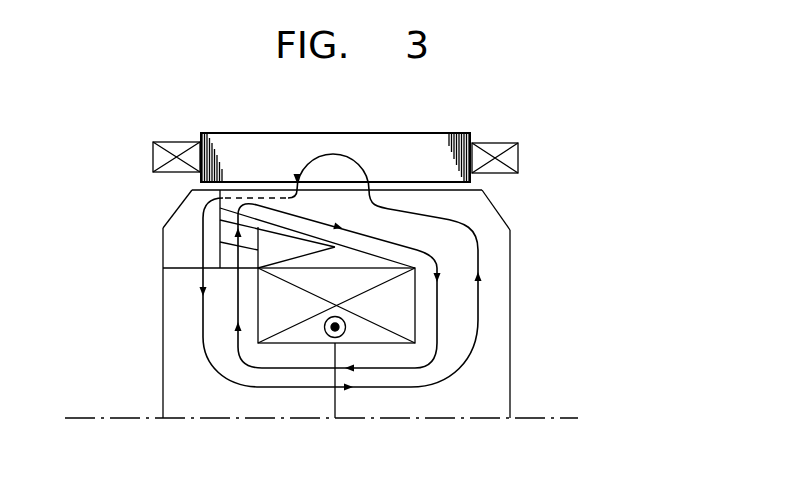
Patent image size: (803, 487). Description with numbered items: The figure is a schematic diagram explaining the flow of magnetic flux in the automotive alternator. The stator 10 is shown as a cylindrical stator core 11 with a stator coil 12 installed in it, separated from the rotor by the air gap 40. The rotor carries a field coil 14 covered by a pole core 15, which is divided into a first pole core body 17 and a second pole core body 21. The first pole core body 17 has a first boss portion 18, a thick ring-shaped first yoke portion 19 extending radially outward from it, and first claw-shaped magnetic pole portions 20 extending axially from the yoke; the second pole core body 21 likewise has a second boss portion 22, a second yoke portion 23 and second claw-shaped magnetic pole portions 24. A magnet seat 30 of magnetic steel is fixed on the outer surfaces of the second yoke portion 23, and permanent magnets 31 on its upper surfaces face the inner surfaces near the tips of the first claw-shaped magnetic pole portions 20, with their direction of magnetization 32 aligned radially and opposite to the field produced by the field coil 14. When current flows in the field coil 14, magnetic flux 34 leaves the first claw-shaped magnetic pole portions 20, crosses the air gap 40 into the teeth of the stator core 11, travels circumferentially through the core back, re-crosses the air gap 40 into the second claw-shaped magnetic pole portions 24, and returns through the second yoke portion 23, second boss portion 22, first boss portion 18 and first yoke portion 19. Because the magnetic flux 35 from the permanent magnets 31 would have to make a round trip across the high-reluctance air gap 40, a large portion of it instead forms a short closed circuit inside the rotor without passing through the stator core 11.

The stator 10 is at (477, 118).
The stator core 11 is at (433, 146).
The stator coil 12 is at (505, 148).
The field coil 14 is at (403, 298).
The pole core 15 is at (498, 202).
The first pole core body 17 is at (519, 402).
The first boss portion 18 is at (470, 392).
The first yoke portion 19 is at (492, 330).
The first claw-shaped magnetic pole portions 20 is at (477, 214).
The second pole core body 21 is at (156, 337).
The second boss portion 22 is at (203, 380).
The second yoke portion 23 is at (183, 305).
The second claw-shaped magnetic pole portions 24 is at (193, 205).
The magnet seat 30 is at (218, 255).
The permanent magnets 31 is at (225, 223).
The direction of magnetization 32 is at (235, 236).
The magnetic flux 34 is at (482, 313).
The magnetic flux 35 is at (445, 250).
The air gap 40 is at (246, 182).